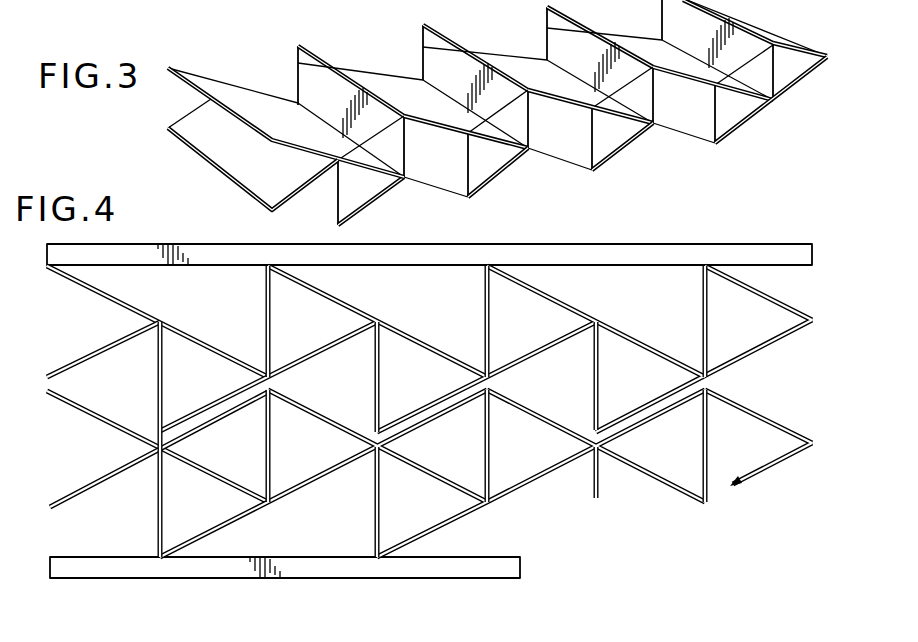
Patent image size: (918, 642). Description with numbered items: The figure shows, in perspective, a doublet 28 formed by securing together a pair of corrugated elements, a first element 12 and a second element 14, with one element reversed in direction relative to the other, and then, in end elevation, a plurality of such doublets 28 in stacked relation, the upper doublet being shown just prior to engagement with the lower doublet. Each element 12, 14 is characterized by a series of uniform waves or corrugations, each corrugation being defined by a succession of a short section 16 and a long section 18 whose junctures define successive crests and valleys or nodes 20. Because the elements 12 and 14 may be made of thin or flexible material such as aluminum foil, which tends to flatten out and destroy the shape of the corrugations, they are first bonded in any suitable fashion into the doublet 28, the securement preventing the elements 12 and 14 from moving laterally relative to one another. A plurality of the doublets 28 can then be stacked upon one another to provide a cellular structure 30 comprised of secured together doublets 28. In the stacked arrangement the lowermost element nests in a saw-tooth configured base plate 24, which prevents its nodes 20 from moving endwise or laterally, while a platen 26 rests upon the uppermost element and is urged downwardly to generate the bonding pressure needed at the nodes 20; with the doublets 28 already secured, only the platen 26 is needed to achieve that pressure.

In FIG. 3, the first element 12 is at (289, 131).
In FIG. 4, the first element 12 is at (121, 303).
In FIG. 3, the second element 14 is at (282, 171).
In FIG. 4, the second element 14 is at (112, 343).
In FIG. 3, the short section 16 is at (298, 64).
In FIG. 4, the short section 16 is at (272, 316).
In FIG. 3, the long section 18 is at (237, 90).
In FIG. 4, the long section 18 is at (312, 412).
In FIG. 3, the node 20 is at (333, 62).
In FIG. 4, the node 20 is at (267, 265).
In FIG. 3, the base plate 24 is at (344, 5).
In FIG. 4, the base plate 24 is at (322, 578).
In FIG. 4, the platen 26 is at (486, 244).
In FIG. 3, the doublet 28 is at (166, 144).
In FIG. 4, the doublet 28 is at (602, 313).
In FIG. 4, the cellular structure 30 is at (565, 389).